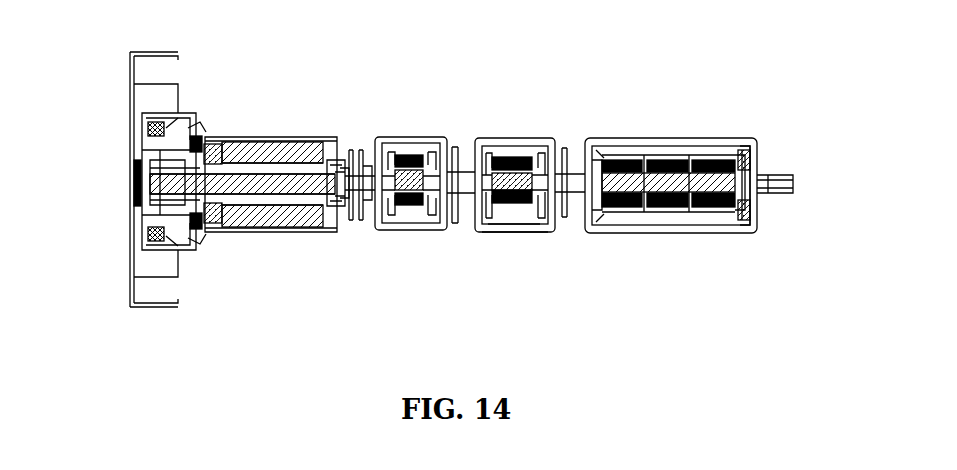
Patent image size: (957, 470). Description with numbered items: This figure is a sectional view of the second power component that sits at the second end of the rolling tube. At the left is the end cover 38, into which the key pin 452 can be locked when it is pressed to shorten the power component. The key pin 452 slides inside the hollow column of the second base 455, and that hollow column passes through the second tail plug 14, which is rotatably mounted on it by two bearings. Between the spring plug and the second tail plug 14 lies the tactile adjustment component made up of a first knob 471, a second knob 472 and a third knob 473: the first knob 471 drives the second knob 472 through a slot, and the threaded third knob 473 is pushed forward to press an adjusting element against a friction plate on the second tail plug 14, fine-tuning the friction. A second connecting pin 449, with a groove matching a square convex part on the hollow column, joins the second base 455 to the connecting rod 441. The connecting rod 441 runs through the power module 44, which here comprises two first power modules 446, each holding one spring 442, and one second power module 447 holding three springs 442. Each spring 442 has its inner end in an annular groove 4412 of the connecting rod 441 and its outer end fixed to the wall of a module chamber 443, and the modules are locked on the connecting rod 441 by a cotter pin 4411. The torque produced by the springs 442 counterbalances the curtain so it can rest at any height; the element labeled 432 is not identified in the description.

The end cover 38 is at (130, 77).
The bearing 432 is at (134, 178).
The first knob 471 is at (186, 113).
The second knob 472 is at (200, 122).
The third knob 473 is at (192, 250).
The second tail plug 14 is at (247, 184).
The key pin 452 is at (236, 137).
The second base 455 is at (290, 140).
The second connecting pin 449 is at (343, 225).
The spring 442 is at (407, 137).
The power module 44 is at (510, 85).
The first power module 446 is at (513, 138).
The annular groove 4412 is at (513, 232).
The cotter pin 4411 is at (565, 217).
The second power module 447 is at (617, 138).
The module chamber 443 is at (716, 234).
The connecting rod 441 is at (800, 184).